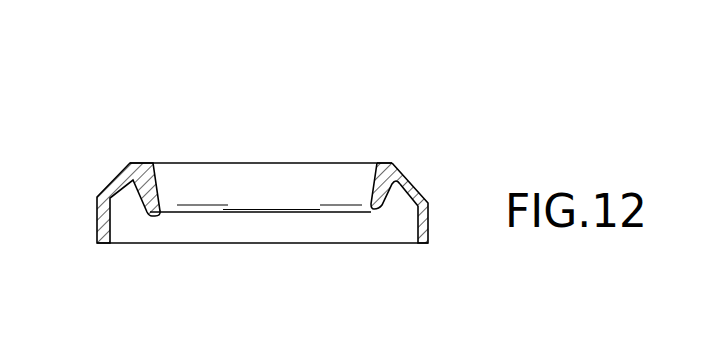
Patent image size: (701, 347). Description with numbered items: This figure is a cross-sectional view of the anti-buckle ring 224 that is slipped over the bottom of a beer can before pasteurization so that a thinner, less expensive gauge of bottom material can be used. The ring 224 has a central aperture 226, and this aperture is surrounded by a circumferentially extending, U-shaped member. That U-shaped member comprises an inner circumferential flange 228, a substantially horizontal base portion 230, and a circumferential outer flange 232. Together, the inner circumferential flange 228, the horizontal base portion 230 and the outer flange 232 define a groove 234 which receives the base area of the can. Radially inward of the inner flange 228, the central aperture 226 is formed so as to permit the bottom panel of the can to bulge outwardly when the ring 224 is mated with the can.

The ring 224 is at (416, 152).
The central aperture 226 is at (298, 178).
The inner circumferential flange 228 is at (371, 191).
The horizontal base portion 230 is at (388, 163).
The circumferential outer flange 232 is at (415, 190).
The groove 234 is at (397, 210).